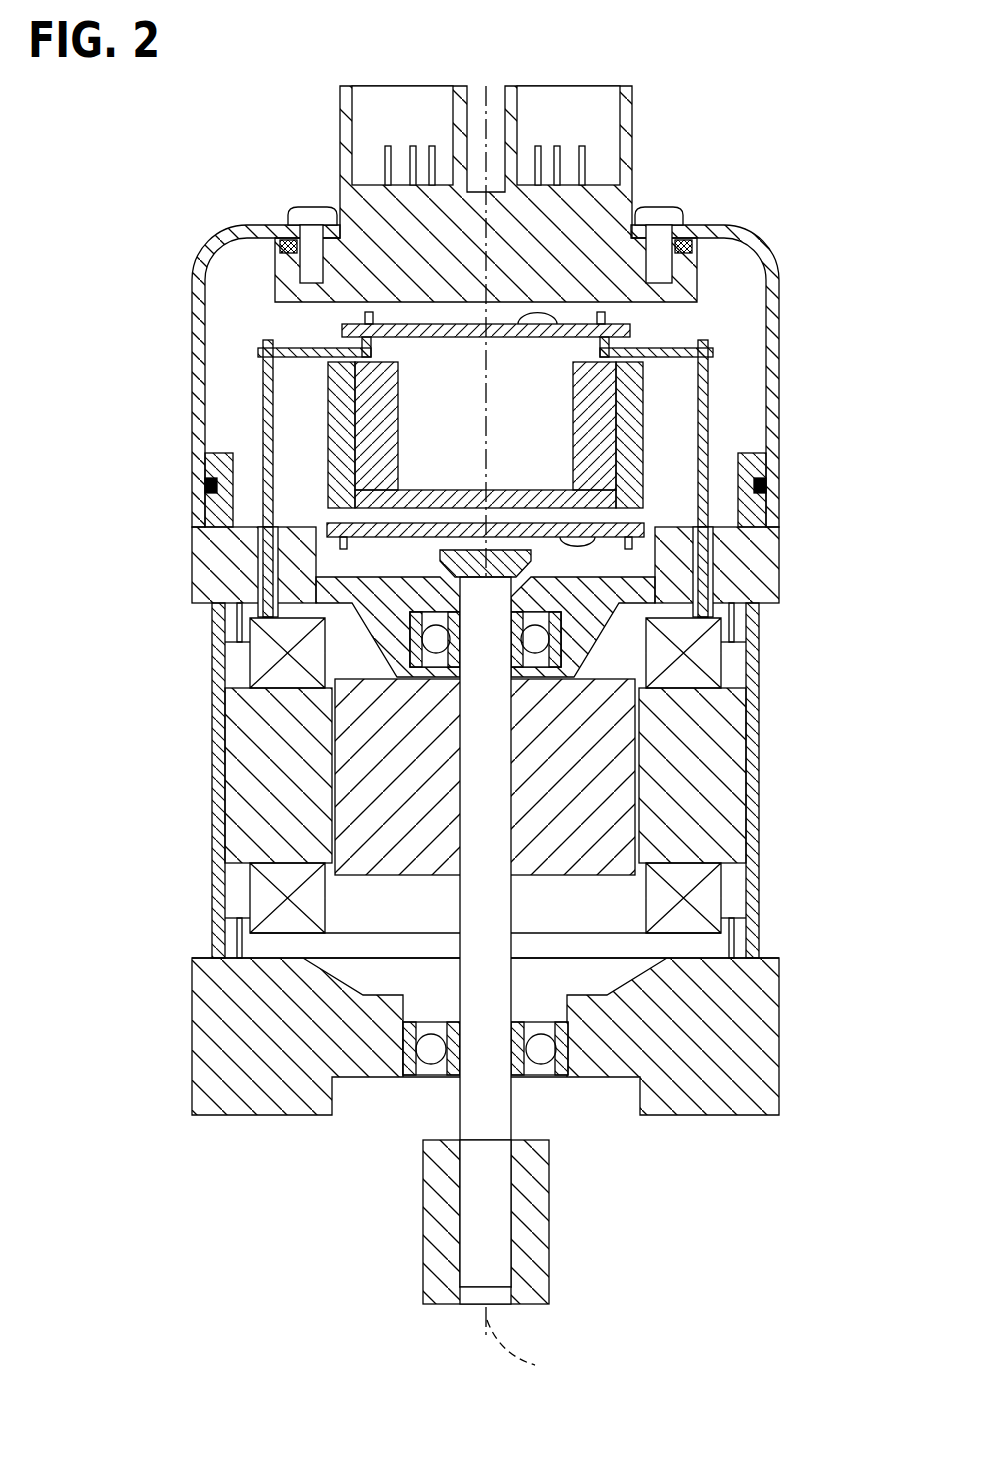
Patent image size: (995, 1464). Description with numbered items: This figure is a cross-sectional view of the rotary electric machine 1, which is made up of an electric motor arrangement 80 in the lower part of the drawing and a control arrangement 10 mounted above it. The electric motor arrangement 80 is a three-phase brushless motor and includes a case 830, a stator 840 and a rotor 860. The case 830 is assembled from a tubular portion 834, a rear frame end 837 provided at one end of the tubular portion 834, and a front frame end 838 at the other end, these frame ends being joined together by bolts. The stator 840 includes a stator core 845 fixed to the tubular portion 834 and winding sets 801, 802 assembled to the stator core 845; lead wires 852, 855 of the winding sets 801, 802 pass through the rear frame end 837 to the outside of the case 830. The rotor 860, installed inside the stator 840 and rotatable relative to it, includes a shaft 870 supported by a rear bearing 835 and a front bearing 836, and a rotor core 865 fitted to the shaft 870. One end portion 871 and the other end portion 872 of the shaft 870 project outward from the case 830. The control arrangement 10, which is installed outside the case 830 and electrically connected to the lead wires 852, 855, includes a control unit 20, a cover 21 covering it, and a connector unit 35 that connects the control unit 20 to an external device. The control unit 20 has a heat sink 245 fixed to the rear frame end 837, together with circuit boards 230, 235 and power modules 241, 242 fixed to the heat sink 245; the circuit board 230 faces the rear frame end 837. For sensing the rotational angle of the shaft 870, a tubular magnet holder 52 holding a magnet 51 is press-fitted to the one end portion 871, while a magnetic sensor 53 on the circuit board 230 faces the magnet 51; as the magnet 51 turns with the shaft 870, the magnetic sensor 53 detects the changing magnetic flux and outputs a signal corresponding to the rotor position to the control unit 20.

The rotary electric machine 1 is at (218, 160).
The control arrangement 10 is at (204, 241).
The control unit 20 is at (244, 370).
The cover 21 is at (772, 300).
The connector unit 35 is at (702, 265).
The magnet 51 is at (300, 588).
The magnet holder 52 is at (500, 556).
The magnetic sensor 53 is at (445, 548).
The electric motor arrangement 80 is at (195, 1030).
The circuit board 230 is at (342, 530).
The circuit board 235 is at (345, 330).
The power module 241 is at (335, 430).
The power module 242 is at (640, 428).
The heat sink 245 is at (618, 400).
The winding set 801 is at (262, 665).
The winding set 802 is at (706, 656).
The case 830 is at (762, 740).
The tubular portion 834 is at (752, 772).
The rear bearing 835 is at (582, 640).
The front bearing 836 is at (572, 1050).
The rear frame end 837 is at (557, 590).
The front frame end 838 is at (752, 1072).
The stator 840 is at (248, 878).
The stator core 845 is at (265, 750).
The lead wire 852 is at (230, 474).
The lead wire 855 is at (742, 474).
The rotor 860 is at (250, 935).
The rotor core 865 is at (365, 795).
The shaft 870 is at (470, 835).
The one end portion 871 is at (540, 625).
The other end portion 872 is at (500, 1213).